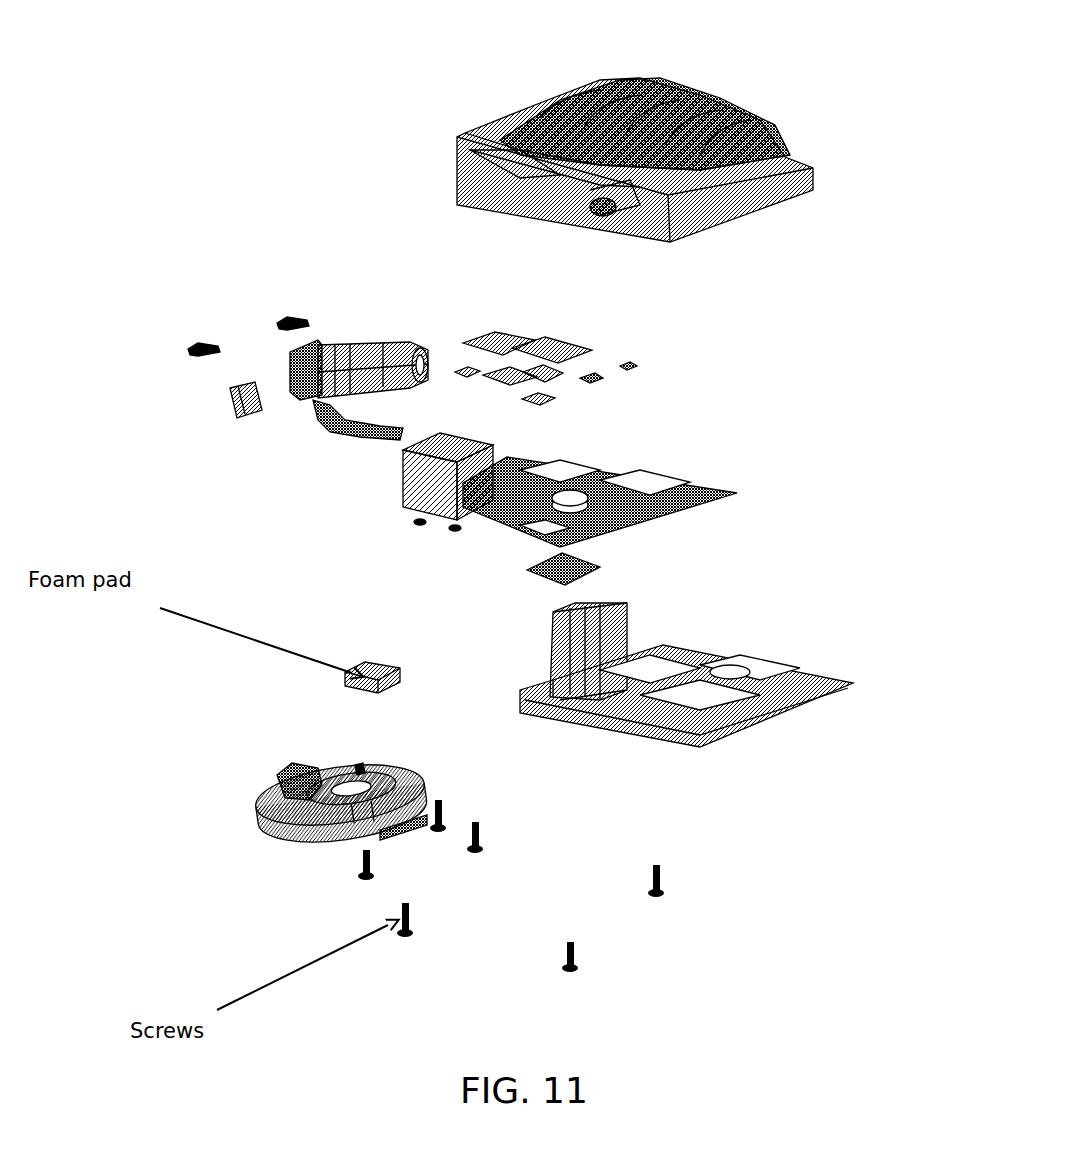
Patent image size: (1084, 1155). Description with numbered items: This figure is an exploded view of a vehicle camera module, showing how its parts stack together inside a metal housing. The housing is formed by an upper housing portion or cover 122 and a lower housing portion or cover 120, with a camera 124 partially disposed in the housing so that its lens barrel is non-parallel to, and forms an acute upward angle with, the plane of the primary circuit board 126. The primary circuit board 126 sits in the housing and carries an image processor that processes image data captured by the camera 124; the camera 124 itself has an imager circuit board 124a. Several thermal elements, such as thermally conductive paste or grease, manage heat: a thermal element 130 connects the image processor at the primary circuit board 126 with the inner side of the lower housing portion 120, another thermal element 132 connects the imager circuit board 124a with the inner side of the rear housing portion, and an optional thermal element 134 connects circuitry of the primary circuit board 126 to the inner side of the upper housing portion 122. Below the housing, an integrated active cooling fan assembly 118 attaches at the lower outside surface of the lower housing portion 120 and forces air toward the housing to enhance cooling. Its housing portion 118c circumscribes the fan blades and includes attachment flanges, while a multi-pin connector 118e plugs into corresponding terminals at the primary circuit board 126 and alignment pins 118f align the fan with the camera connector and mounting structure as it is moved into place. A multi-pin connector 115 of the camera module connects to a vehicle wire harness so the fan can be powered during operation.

The multi-pin connector 115 is at (415, 467).
The cooling fan assembly 118 is at (268, 843).
The housing portion 118c is at (398, 836).
The multi-pin connector 118e is at (285, 768).
The alignment pins 118f is at (358, 767).
The lower housing portion 120 is at (738, 728).
The upper housing portion 122 is at (802, 147).
The camera 124 is at (260, 234).
The imager circuit board 124a is at (287, 353).
The primary circuit board 126 is at (738, 493).
The thermal element 130 is at (610, 563).
The thermal element 132 is at (227, 400).
The thermal element 134 is at (603, 377).